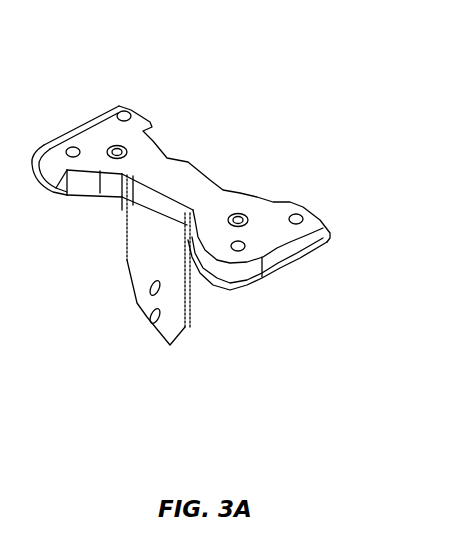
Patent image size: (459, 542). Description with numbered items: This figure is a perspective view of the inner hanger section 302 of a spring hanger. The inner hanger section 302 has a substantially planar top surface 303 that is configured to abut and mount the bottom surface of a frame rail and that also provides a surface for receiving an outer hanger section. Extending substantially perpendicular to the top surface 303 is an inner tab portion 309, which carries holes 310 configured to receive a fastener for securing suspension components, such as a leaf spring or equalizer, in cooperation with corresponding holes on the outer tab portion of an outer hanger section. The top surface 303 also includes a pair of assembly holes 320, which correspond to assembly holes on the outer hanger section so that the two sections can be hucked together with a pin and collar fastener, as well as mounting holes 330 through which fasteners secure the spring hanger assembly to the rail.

The inner hanger section 302 is at (216, 240).
The top surface 303 is at (187, 175).
The inner tab portion 309 is at (119, 296).
The holes 310 is at (155, 317).
The assembly holes 320 is at (124, 112).
The mounting holes 330 is at (114, 153).